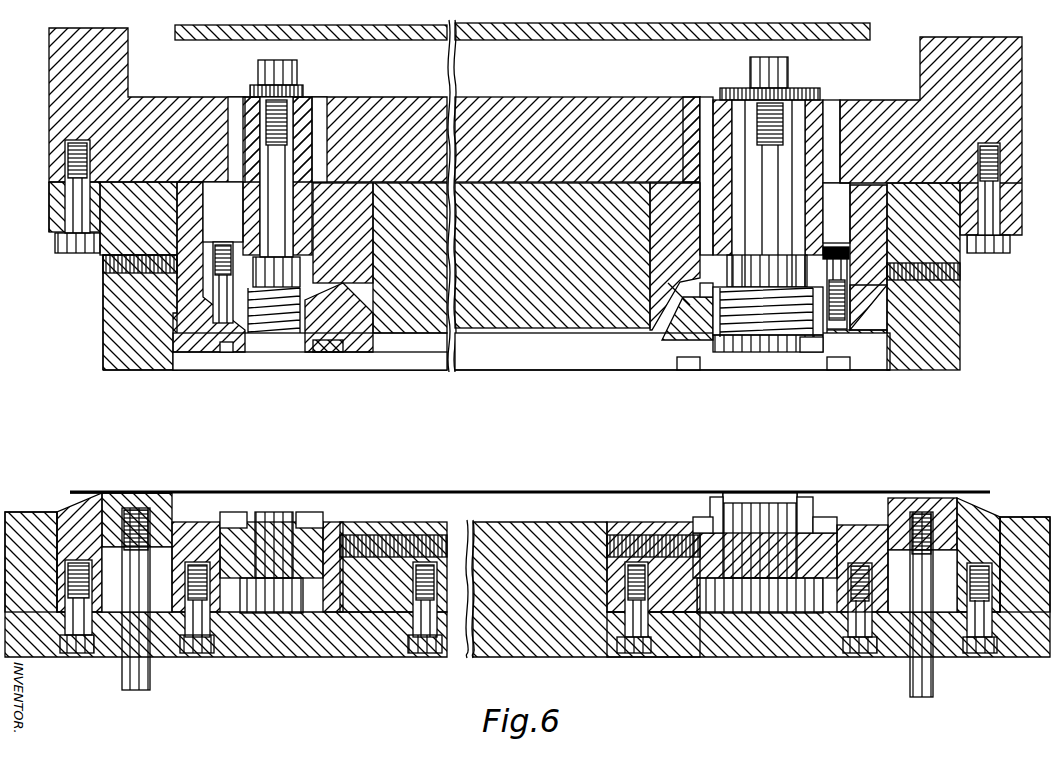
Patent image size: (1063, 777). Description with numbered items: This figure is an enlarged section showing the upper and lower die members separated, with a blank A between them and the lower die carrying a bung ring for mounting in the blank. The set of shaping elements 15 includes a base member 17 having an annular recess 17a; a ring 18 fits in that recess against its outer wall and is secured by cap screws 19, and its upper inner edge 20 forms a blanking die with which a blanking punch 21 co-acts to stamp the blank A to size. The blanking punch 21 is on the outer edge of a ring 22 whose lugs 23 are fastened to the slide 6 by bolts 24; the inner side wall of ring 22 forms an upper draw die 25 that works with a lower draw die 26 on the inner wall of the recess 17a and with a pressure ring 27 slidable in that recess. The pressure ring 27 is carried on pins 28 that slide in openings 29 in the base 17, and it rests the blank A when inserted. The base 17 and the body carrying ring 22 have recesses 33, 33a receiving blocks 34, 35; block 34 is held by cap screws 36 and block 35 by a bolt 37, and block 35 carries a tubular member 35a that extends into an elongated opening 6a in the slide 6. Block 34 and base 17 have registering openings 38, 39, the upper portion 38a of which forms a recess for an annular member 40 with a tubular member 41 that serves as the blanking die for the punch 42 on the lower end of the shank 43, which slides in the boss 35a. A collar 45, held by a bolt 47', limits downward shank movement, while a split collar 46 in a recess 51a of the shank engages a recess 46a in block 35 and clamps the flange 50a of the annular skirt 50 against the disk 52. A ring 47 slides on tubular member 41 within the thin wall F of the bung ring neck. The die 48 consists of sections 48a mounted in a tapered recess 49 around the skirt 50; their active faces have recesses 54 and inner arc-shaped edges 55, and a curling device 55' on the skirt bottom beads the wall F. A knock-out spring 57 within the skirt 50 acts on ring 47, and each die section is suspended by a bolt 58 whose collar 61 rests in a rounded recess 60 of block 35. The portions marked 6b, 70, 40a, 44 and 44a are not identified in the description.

The slide 6 is at (237, 105).
The opening 6a is at (860, 120).
The upper die plate 6b is at (560, 100).
The cover plate 70 is at (512, 43).
The set of shaping elements 15 is at (923, 290).
The base member 17 is at (500, 640).
The annular recess 17a is at (50, 512).
The ring 18 is at (57, 512).
The cap screws 19 is at (62, 653).
The upper inner edge 20 is at (102, 493).
The blanking punch 21 is at (103, 370).
The ring 22 is at (140, 368).
The lugs 23 is at (50, 210).
The bolts 24 is at (55, 248).
The upper draw die 25 is at (173, 370).
The lower draw die 26 is at (173, 522).
The pressure ring 27 is at (120, 493).
The pins 28 is at (132, 690).
The openings 29 is at (118, 650).
The recess 33 is at (600, 535).
The recess 33a is at (552, 268).
The block 34 is at (690, 612).
The block 35 is at (686, 182).
The tubular member 35a is at (700, 97).
The cap screws 36 is at (625, 650).
The bolt 37 is at (908, 262).
The opening 38 is at (758, 600).
The enlarged portion 38a is at (845, 528).
The opening 39 is at (772, 640).
The annular member 40 is at (720, 548).
The lip 40a is at (690, 533).
The tubular member 41 is at (795, 500).
The punch 42 is at (760, 340).
The shank 43 is at (768, 200).
The sleeve 44 is at (822, 215).
The sleeve shoulder 44a is at (720, 128).
The collar 45 is at (820, 92).
The collar 46 is at (839, 276).
The recess 46a is at (846, 252).
The ring 47 is at (760, 484).
The bolt 47' is at (789, 63).
The die 48 is at (672, 352).
The die sections 48a is at (330, 370).
The recess 49 is at (668, 283).
The annular skirt 50 is at (713, 288).
The flange 50a is at (700, 247).
The recess 51a is at (760, 255).
The disk 52 is at (687, 318).
The recesses 54 is at (697, 355).
The inner arc-shaped edges 55 is at (768, 354).
The curling or beading device 55' is at (806, 365).
The spring 57 is at (258, 352).
The bolt 58 is at (867, 297).
The recess 60 is at (832, 192).
The collar 61 is at (868, 257).
The blank A is at (495, 491).
The thin wall F is at (712, 500).